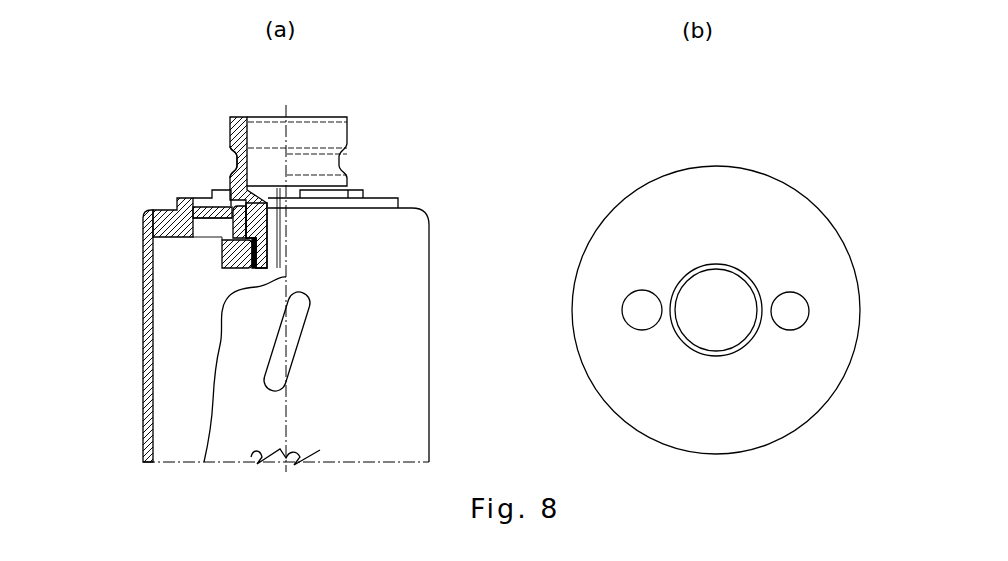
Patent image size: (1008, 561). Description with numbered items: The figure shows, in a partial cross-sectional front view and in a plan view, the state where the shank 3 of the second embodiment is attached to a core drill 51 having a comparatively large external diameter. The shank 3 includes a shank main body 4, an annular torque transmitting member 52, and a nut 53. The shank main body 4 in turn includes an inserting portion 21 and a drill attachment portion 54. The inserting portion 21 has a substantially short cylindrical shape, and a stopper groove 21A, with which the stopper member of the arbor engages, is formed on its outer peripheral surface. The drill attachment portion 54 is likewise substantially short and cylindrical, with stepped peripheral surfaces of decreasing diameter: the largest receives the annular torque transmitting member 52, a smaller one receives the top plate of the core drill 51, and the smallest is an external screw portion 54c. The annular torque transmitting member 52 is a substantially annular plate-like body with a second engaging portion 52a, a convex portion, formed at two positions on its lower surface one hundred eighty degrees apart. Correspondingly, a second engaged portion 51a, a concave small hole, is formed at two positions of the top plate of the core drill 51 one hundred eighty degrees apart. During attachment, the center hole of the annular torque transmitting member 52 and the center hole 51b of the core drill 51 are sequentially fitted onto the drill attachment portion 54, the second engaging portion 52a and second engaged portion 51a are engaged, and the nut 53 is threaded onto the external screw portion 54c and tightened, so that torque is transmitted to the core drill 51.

The shank 3 is at (183, 150).
The shank main body 4 is at (345, 134).
The inserting portion 21 is at (236, 142).
The stopper groove 21A is at (238, 167).
The core drill 51 is at (415, 302).
The second engaged portion 51a is at (208, 228).
The center hole 51b is at (243, 217).
The annular torque transmitting member 52 is at (402, 194).
The second engaging portion 52a is at (198, 225).
The nut 53 is at (222, 247).
The drill attachment portion 54 is at (257, 220).
The external screw portion 54c is at (253, 252).